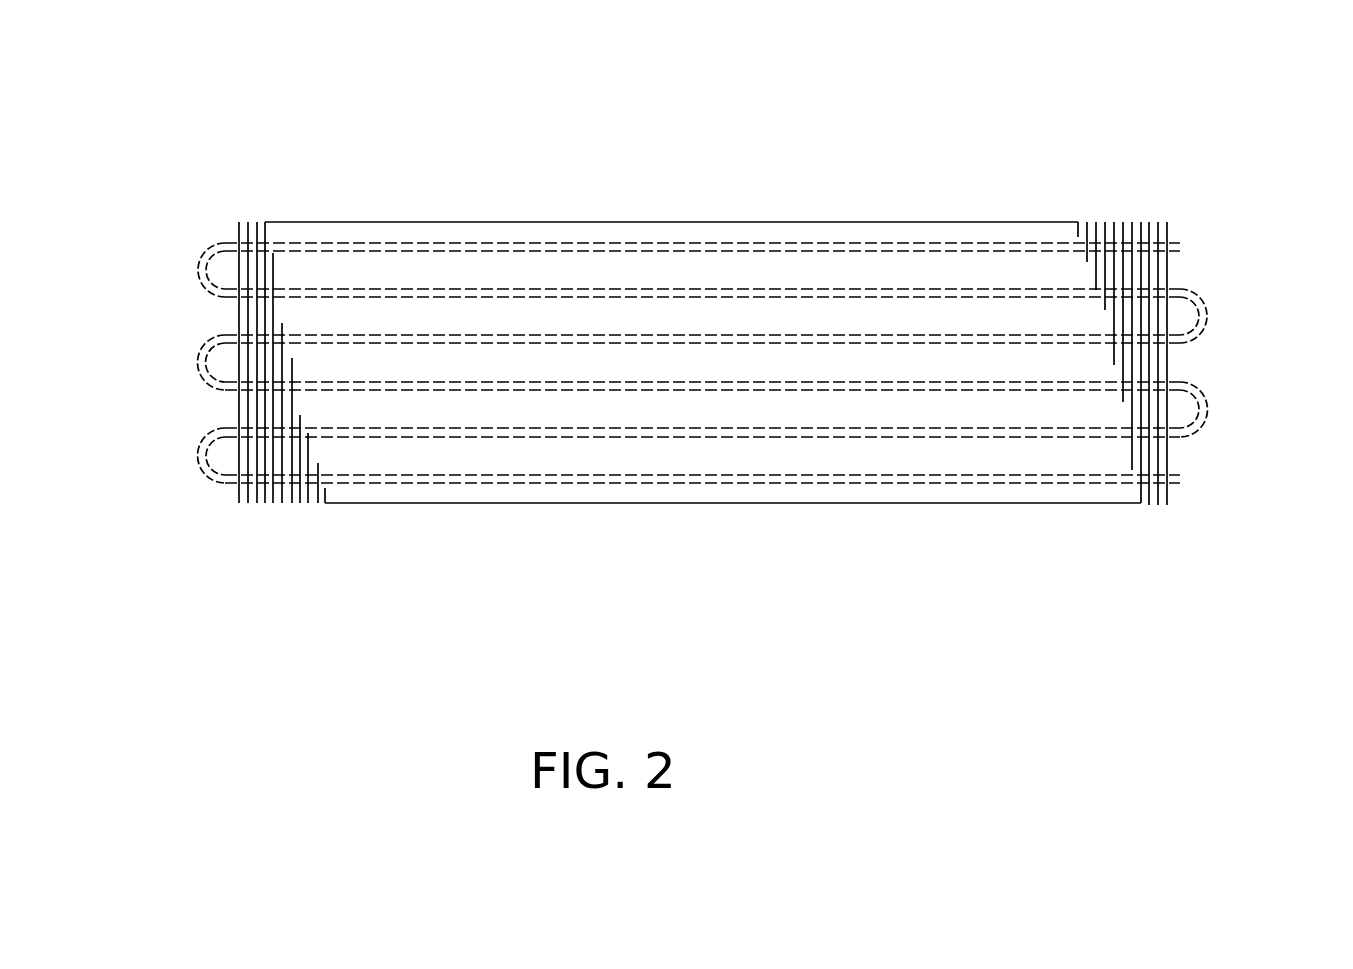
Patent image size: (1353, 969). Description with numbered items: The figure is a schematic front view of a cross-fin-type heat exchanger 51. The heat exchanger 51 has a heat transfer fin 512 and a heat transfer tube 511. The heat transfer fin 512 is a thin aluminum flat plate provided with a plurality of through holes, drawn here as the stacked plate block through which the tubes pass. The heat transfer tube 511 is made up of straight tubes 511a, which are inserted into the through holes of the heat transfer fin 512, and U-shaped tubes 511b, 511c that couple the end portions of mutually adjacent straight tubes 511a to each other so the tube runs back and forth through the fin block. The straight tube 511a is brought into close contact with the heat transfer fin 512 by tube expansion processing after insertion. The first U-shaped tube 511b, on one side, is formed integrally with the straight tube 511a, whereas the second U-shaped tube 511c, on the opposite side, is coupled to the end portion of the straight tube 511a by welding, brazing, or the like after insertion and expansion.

The cross-fin-type heat exchanger 51 is at (701, 310).
The heat transfer tube 511 is at (701, 288).
The straight tube 511a is at (615, 335).
The first U-shaped tube 511b is at (198, 271).
The second U-shaped tube 511c is at (1207, 313).
The heat transfer fin 512 is at (303, 503).